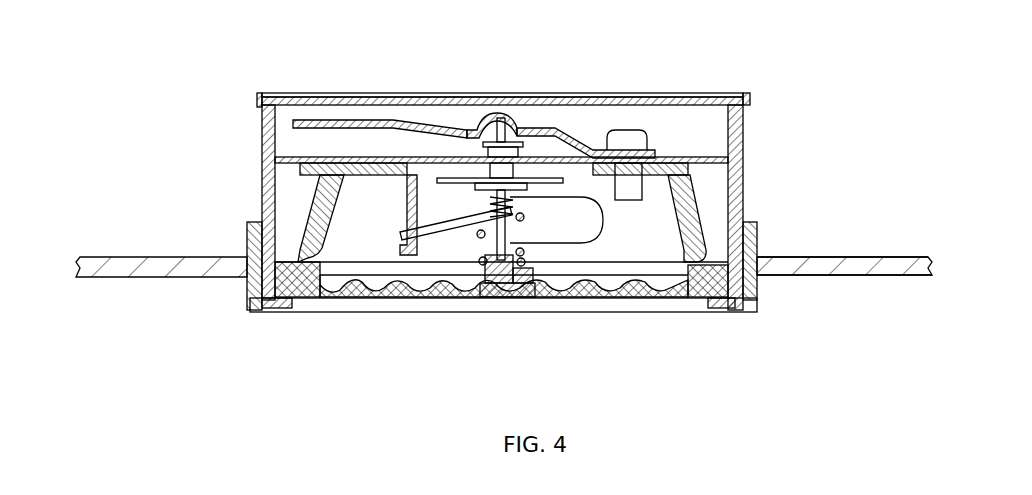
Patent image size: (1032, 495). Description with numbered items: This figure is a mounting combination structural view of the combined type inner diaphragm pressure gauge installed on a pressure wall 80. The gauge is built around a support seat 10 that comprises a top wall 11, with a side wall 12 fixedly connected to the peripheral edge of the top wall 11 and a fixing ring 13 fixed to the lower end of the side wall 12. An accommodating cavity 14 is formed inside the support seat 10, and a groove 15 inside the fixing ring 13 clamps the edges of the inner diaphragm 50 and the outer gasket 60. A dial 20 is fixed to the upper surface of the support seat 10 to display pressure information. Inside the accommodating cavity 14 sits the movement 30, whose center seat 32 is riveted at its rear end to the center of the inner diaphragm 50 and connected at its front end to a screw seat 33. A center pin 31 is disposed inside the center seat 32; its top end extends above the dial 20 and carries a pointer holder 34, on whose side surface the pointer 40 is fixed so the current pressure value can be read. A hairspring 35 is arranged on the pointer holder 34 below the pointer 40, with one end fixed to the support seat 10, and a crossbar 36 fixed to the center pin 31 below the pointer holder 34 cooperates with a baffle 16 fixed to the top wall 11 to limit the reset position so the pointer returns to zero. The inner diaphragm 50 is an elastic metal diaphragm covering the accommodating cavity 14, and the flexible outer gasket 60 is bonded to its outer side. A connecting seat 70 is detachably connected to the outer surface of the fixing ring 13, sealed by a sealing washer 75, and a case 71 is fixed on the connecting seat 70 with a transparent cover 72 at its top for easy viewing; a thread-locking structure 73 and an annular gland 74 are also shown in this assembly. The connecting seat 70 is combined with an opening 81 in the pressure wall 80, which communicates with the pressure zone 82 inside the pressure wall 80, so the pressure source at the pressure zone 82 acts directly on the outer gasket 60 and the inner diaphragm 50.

The support seat 10 is at (690, 215).
The top wall 11 is at (630, 130).
The side wall 12 is at (730, 163).
The fixing ring 13 is at (757, 300).
The accommodating cavity 14 is at (748, 222).
The groove 15 is at (735, 305).
The baffle 16 is at (400, 255).
The dial 20 is at (318, 163).
The movement 30 is at (535, 258).
The center pin 31 is at (497, 112).
The center seat 32 is at (515, 268).
The screw seat 33 is at (470, 285).
The pointer holder 34 is at (462, 135).
The hairspring 35 is at (551, 175).
The crossbar 36 is at (440, 235).
The pointer 40 is at (365, 125).
The inner diaphragm 50 is at (648, 290).
The outer gasket 60 is at (703, 288).
The connecting seat 70 is at (252, 298).
The case 71 is at (262, 150).
The transparent cover 72 is at (275, 98).
The thread-locking structure 73 is at (258, 243).
The annular gland 74 is at (258, 95).
The sealing washer 75 is at (282, 306).
The pressure wall 80 is at (885, 257).
The opening 81 is at (800, 257).
The pressure zone 82 is at (898, 285).